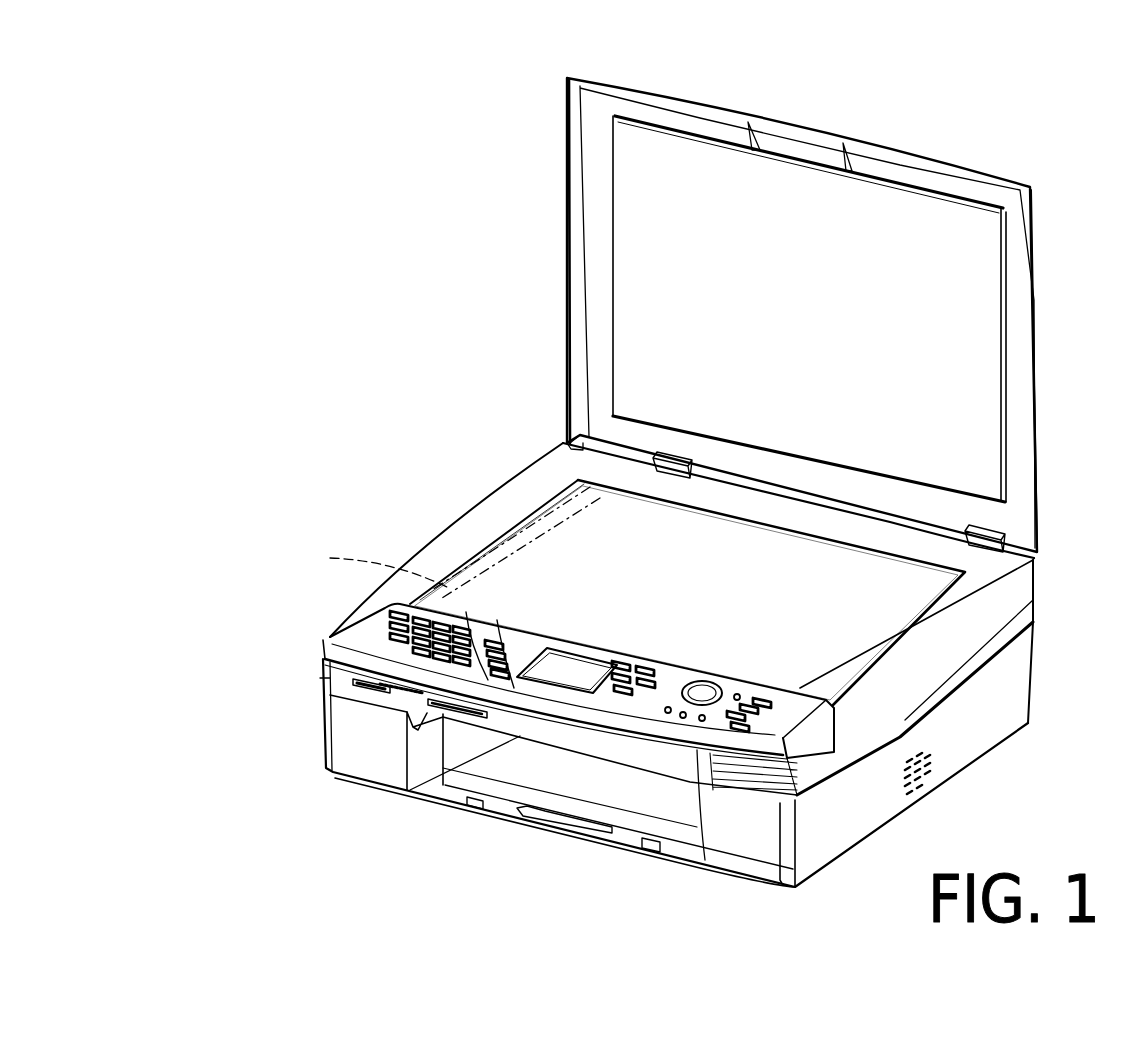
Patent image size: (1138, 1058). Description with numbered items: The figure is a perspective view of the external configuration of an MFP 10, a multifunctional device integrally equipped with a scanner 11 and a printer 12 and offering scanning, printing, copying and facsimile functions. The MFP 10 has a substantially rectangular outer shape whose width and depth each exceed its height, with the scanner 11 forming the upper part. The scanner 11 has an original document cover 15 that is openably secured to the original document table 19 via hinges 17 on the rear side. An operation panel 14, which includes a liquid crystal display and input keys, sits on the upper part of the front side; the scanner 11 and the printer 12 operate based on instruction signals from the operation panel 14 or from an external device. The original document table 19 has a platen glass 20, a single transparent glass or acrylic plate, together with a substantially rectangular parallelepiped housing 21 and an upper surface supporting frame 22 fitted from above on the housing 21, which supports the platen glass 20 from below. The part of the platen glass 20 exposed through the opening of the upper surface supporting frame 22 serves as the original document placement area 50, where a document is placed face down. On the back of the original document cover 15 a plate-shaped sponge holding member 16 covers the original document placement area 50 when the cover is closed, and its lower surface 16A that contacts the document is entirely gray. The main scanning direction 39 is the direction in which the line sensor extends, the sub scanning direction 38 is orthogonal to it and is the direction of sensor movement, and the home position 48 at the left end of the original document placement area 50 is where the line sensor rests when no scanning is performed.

The MFP 10 is at (296, 823).
The scanner 11 is at (349, 487).
The printer 12 is at (290, 731).
The operation panel 14 is at (383, 620).
The original document cover 15 is at (1040, 298).
The holding member 16 is at (935, 378).
The lower surface 16A is at (801, 316).
The hinges 17 is at (670, 462).
The original document table 19 is at (939, 675).
The platen glass 20 is at (832, 598).
The housing 21 is at (1054, 611).
The upper surface supporting frame 22 is at (533, 473).
The sub scanning direction 38 is at (563, 863).
The main scanning direction 39 is at (460, 474).
The home position 48 is at (373, 563).
The original document placement area 50 is at (704, 595).